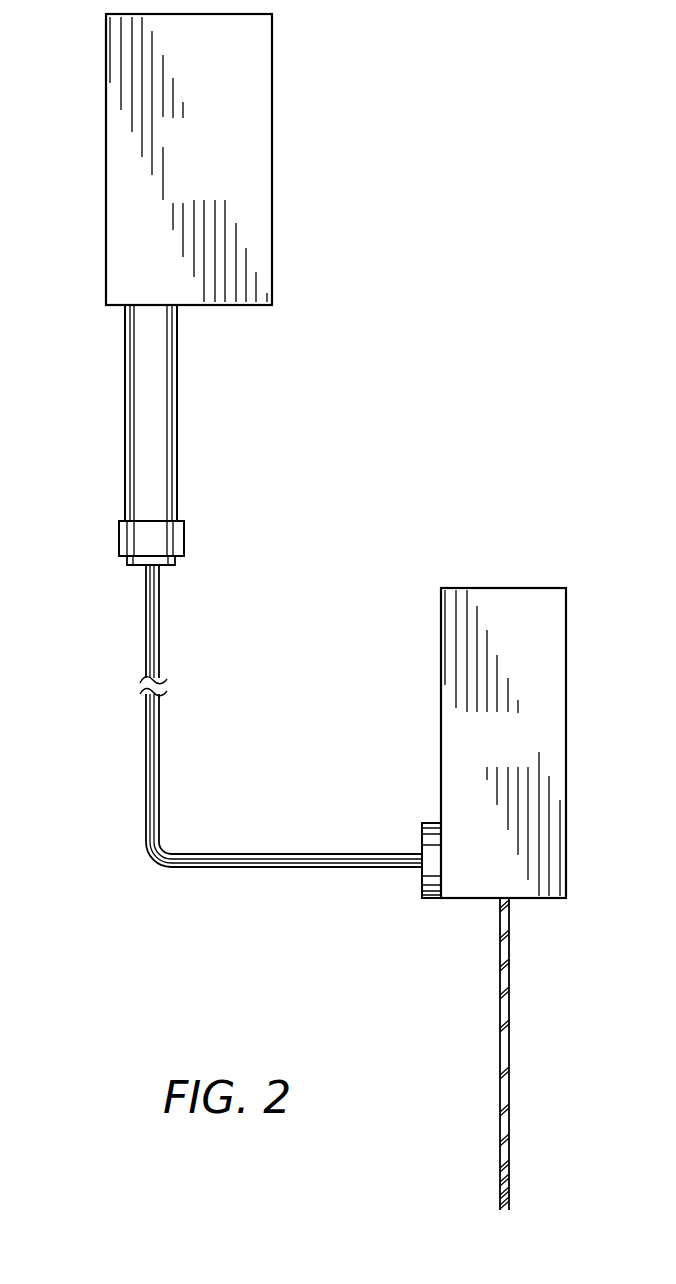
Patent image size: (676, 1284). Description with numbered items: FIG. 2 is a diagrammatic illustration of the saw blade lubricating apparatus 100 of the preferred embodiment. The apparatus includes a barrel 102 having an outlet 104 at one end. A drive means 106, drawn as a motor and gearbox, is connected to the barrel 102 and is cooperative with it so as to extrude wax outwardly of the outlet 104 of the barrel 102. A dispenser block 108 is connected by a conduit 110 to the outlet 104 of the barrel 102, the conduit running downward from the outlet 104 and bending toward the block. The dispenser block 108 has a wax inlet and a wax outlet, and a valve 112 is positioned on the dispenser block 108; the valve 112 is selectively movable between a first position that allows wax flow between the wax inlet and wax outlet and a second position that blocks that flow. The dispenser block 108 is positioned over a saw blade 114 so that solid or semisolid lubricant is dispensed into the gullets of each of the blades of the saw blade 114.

The saw blade lubricating apparatus 100 is at (335, 449).
The barrel 102 is at (130, 412).
The outlet 104 is at (162, 567).
The drive means 106 is at (263, 180).
The dispenser block 108 is at (452, 632).
The conduit 110 is at (148, 805).
The valve 112 is at (422, 828).
The saw blade 114 is at (502, 1010).